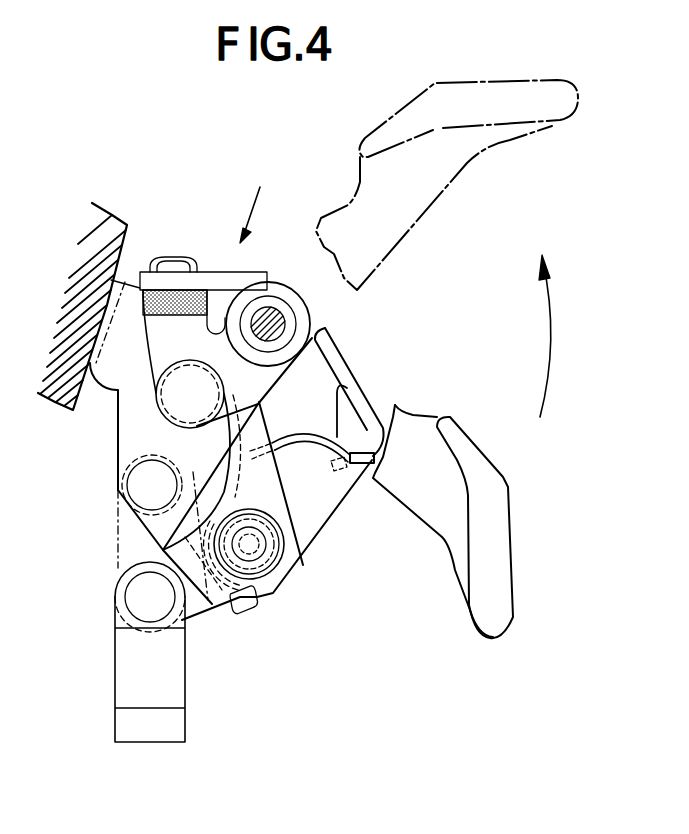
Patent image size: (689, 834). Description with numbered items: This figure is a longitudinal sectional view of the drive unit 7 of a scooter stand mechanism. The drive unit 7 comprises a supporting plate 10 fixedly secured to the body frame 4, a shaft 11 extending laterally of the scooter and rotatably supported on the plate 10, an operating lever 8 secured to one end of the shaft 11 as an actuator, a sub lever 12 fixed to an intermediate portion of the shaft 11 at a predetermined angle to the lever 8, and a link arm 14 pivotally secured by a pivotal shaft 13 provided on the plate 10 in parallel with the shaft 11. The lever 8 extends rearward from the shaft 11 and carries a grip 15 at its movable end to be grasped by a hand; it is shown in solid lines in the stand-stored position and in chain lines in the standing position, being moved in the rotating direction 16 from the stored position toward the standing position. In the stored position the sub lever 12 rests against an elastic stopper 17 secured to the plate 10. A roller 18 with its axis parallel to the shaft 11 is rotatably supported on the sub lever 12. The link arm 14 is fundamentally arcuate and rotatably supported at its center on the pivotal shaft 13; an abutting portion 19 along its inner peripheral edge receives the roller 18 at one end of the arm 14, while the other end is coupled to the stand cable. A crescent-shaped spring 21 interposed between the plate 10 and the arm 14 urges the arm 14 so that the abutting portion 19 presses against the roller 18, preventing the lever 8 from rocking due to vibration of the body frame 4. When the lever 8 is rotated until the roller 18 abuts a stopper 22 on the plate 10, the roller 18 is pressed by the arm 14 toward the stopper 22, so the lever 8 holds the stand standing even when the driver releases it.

The body frame 4 is at (120, 252).
The drive unit 7 is at (254, 201).
The operating lever 8 is at (328, 212).
The supporting plate 10 is at (332, 514).
The shaft 11 is at (268, 317).
The sub lever 12 is at (152, 343).
The pivotal shaft 13 is at (282, 573).
The link arm 14 is at (273, 491).
The grip 15 is at (436, 82).
The rotating direction 16 is at (553, 347).
The elastic stopper 17 is at (203, 290).
The roller 18 is at (168, 419).
The abutting portion 19 is at (227, 475).
The crescent-shaped spring 21 is at (297, 440).
The stopper 22 is at (337, 353).